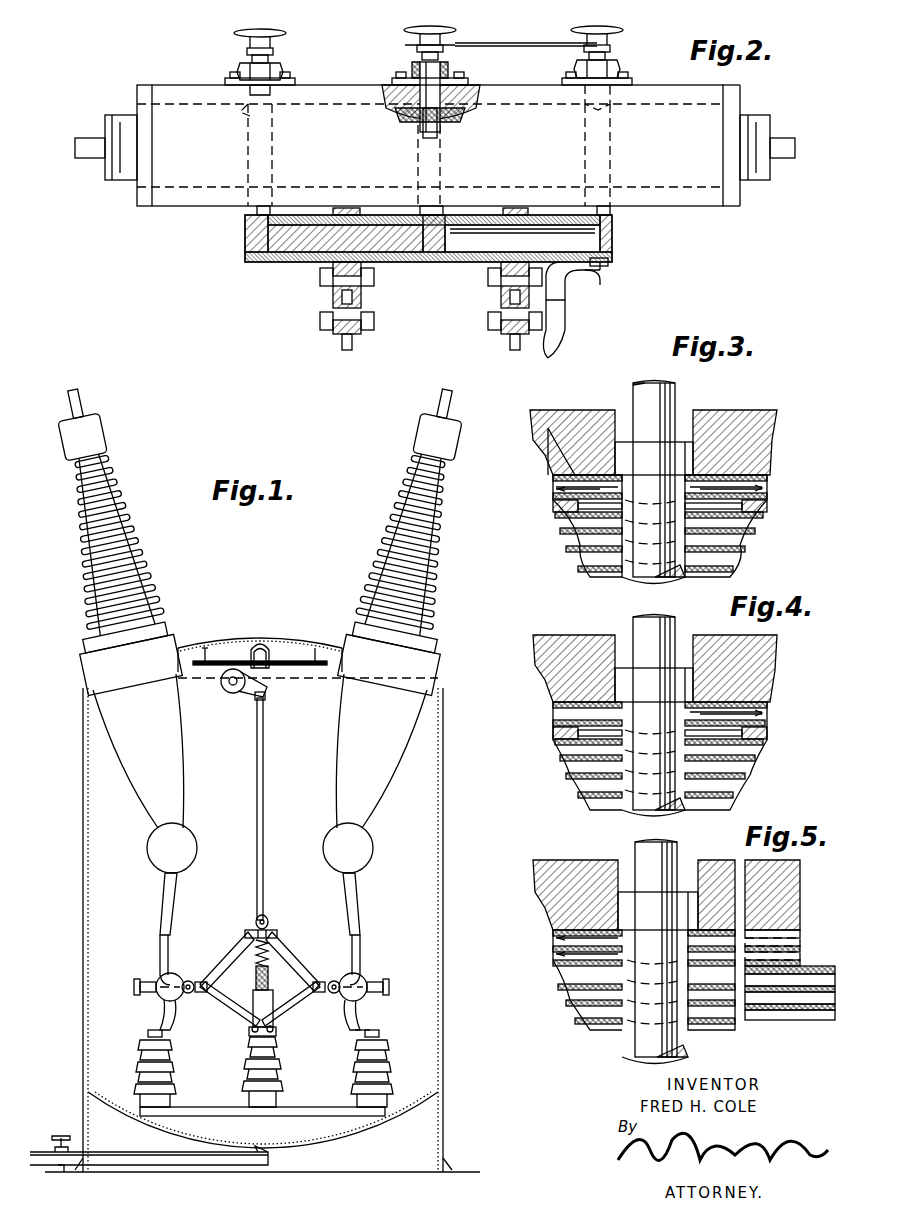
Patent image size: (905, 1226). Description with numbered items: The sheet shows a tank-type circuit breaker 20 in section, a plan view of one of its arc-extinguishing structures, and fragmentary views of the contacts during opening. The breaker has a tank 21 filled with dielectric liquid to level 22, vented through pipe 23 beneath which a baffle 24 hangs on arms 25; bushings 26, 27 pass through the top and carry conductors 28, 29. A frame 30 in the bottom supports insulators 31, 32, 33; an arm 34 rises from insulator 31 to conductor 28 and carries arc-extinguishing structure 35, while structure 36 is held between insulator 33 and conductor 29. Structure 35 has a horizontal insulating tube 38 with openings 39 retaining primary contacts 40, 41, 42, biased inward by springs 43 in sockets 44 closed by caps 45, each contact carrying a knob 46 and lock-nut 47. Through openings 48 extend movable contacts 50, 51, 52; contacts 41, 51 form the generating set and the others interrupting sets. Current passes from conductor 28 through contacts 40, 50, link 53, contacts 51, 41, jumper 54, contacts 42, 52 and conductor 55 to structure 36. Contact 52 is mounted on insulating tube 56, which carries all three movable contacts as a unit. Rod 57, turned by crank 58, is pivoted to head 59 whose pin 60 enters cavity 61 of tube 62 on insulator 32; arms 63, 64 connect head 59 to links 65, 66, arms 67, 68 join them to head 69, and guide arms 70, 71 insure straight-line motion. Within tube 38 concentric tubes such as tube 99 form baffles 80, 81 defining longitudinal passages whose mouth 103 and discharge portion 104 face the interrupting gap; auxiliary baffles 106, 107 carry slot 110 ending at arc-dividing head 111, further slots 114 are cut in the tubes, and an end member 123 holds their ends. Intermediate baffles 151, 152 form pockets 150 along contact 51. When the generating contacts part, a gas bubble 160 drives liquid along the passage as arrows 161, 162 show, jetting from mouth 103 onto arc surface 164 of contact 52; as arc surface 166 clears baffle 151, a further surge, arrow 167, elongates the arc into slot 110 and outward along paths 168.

In FIG. 1, the circuit breaker 20 is at (294, 628).
In FIG. 1, the tank 21 is at (444, 832).
In FIG. 1, the liquid level 22 is at (330, 685).
In FIG. 1, the vent pipe 23 is at (262, 640).
In FIG. 1, the baffle 24 is at (226, 660).
In FIG. 1, the arms 25 is at (202, 656).
In FIG. 1, the bushing 26 is at (400, 640).
In FIG. 1, the bushing 27 is at (125, 712).
In FIG. 1, the conductor 28 is at (440, 400).
In FIG. 1, the conductor 29 is at (78, 400).
In FIG. 1, the frame 30 is at (338, 1116).
In FIG. 1, the insulator 31 is at (388, 1066).
In FIG. 1, the insulator 32 is at (280, 1084).
In FIG. 1, the insulator 33 is at (172, 1080).
In FIG. 1, the arm 34 is at (364, 1026).
In FIG. 2, the arc-extinguishing structure 35 is at (178, 86).
In FIG. 1, the arc-extinguishing structure 35 is at (350, 1004).
In FIG. 1, the arc-extinguishing structure 36 is at (162, 1000).
In FIG. 2, the tube 38 is at (326, 98).
In FIG. 3, the tube 38 is at (540, 450).
In FIG. 4, the tube 38 is at (570, 648).
In FIG. 2, the opening 39 is at (276, 90).
In FIG. 2, the primary contact 40 is at (252, 114).
In FIG. 2, the primary contact 41 is at (470, 90).
In FIG. 3, the primary contact 41 is at (685, 445).
In FIG. 4, the primary contact 41 is at (686, 670).
In FIG. 2, the primary contact 42 is at (612, 106).
In FIG. 5, the primary contact 42 is at (636, 890).
In FIG. 2, the compression spring 43 is at (452, 80).
In FIG. 2, the socket 44 is at (242, 76).
In FIG. 2, the cap 45 is at (256, 60).
In FIG. 2, the knob 46 is at (272, 22).
In FIG. 2, the lock-nut 47 is at (410, 45).
In FIG. 2, the opening 48 is at (248, 212).
In FIG. 2, the movable contact 50 is at (262, 160).
In FIG. 2, the movable contact 51 is at (428, 116).
In FIG. 3, the movable contact 51 is at (615, 575).
In FIG. 4, the movable contact 51 is at (615, 805).
In FIG. 2, the movable contact 52 is at (592, 150).
In FIG. 5, the movable contact 52 is at (630, 1045).
In FIG. 2, the conducting link 53 is at (300, 258).
In FIG. 2, the jumper 54 is at (530, 43).
In FIG. 2, the conductor 55 is at (568, 334).
In FIG. 2, the tube of insulating material 56 is at (612, 226).
In FIG. 1, the tube of insulating material 56 is at (338, 986).
In FIG. 1, the rod 57 is at (264, 770).
In FIG. 1, the crank 58 is at (238, 695).
In FIG. 1, the head 59 is at (268, 926).
In FIG. 1, the pin 60 is at (240, 962).
In FIG. 1, the cavity 61 is at (270, 962).
In FIG. 1, the tube 62 is at (254, 1032).
In FIG. 2, the arm 63 is at (352, 346).
In FIG. 1, the arm 63 is at (280, 960).
In FIG. 1, the arm 64 is at (248, 946).
In FIG. 2, the link 65 is at (364, 300).
In FIG. 1, the link 65 is at (318, 994).
In FIG. 1, the link 66 is at (203, 996).
In FIG. 1, the arm 67 is at (283, 1010).
In FIG. 1, the arm 68 is at (246, 1000).
In FIG. 1, the head 69 is at (282, 1027).
In FIG. 2, the guide arm 70 is at (336, 298).
In FIG. 1, the guide arm 70 is at (290, 986).
In FIG. 1, the guide arm 71 is at (228, 974).
In FIG. 4, the baffle 80 is at (768, 702).
In FIG. 4, the baffle 81 is at (750, 745).
In FIG. 4, the tube 99 is at (710, 785).
In FIG. 3, the mouth 103 is at (575, 520).
In FIG. 4, the mouth 103 is at (595, 715).
In FIG. 3, the discharge portion 104 is at (745, 520).
In FIG. 5, the auxiliary baffle 106 is at (802, 940).
In FIG. 5, the auxiliary baffle 107 is at (818, 990).
In FIG. 5, the slot 110 is at (712, 940).
In FIG. 5, the head 111 is at (778, 990).
In FIG. 5, the slot 114 is at (710, 965).
In FIG. 2, the end member 123 is at (126, 98).
In FIG. 5, the end member 123 is at (800, 866).
In FIG. 4, the pocket 150 is at (776, 684).
In FIG. 4, the intermediate baffle 151 is at (778, 660).
In FIG. 4, the intermediate baffle 152 is at (735, 768).
In FIG. 3, the gas bubble boundary 160 is at (600, 410).
In FIG. 3, the arrow 161 is at (762, 412).
In FIG. 3, the arrow 162 is at (558, 410).
In FIG. 5, the arc surface 164 is at (612, 970).
In FIG. 5, the arc surface 166 is at (652, 823).
In FIG. 5, the arrow 167 is at (600, 960).
In FIG. 5, the arc paths 168 is at (800, 890).